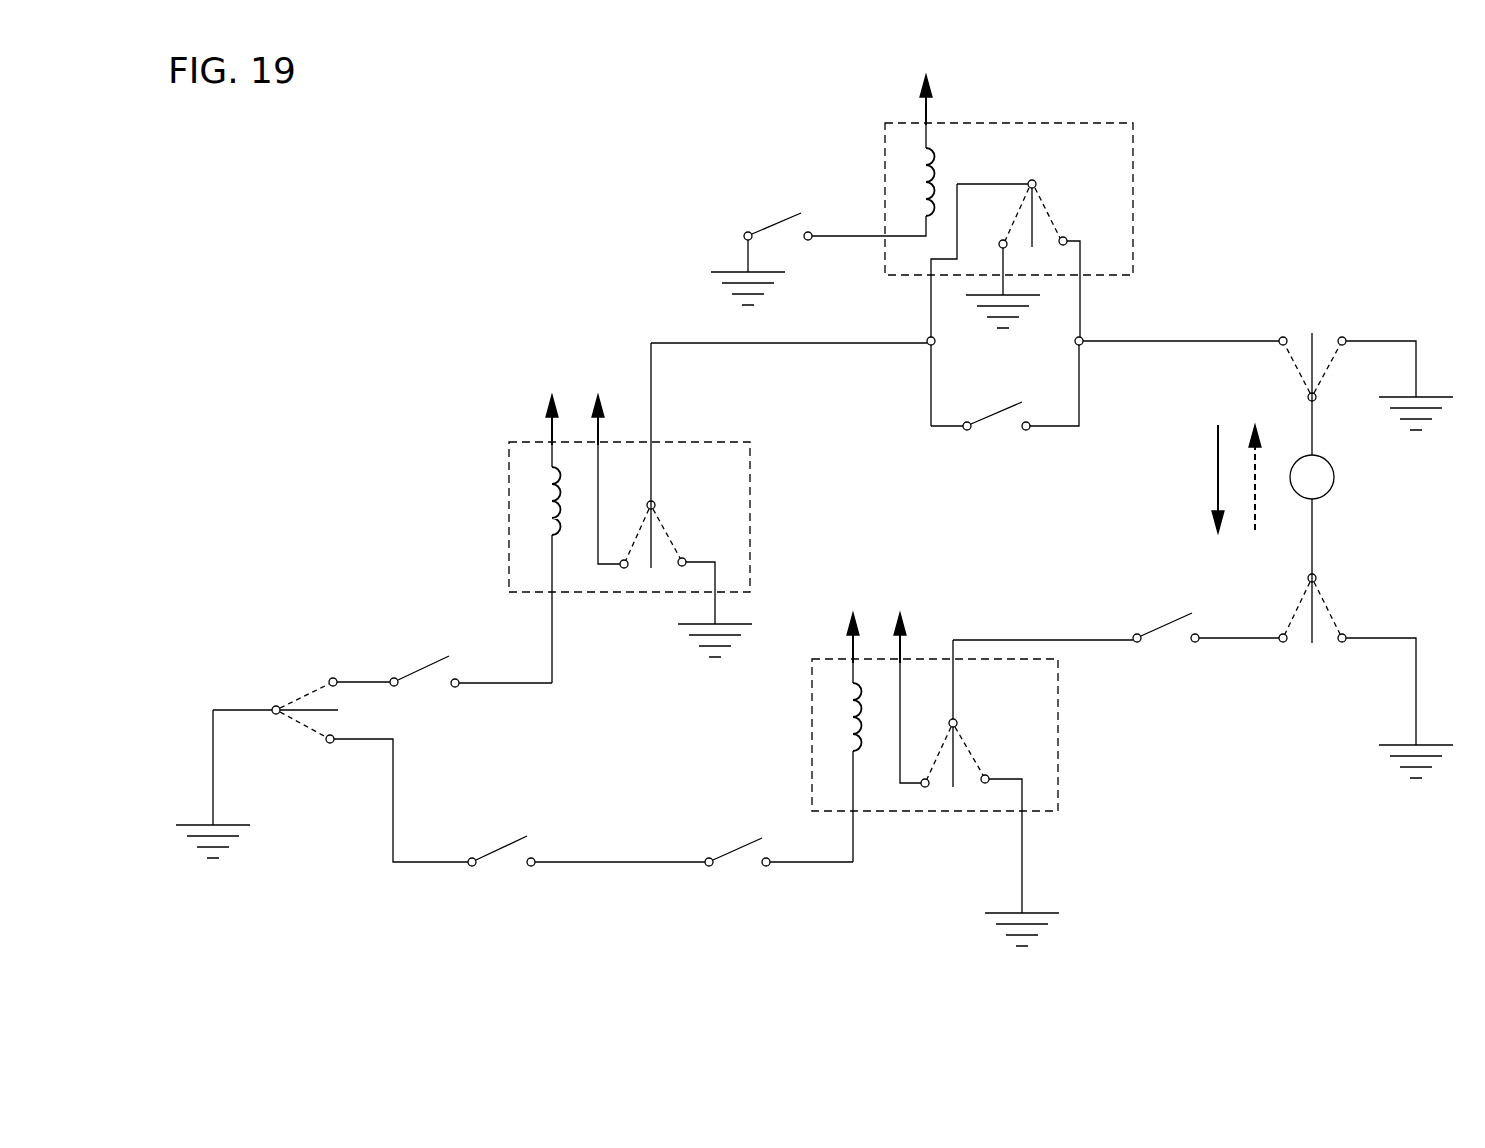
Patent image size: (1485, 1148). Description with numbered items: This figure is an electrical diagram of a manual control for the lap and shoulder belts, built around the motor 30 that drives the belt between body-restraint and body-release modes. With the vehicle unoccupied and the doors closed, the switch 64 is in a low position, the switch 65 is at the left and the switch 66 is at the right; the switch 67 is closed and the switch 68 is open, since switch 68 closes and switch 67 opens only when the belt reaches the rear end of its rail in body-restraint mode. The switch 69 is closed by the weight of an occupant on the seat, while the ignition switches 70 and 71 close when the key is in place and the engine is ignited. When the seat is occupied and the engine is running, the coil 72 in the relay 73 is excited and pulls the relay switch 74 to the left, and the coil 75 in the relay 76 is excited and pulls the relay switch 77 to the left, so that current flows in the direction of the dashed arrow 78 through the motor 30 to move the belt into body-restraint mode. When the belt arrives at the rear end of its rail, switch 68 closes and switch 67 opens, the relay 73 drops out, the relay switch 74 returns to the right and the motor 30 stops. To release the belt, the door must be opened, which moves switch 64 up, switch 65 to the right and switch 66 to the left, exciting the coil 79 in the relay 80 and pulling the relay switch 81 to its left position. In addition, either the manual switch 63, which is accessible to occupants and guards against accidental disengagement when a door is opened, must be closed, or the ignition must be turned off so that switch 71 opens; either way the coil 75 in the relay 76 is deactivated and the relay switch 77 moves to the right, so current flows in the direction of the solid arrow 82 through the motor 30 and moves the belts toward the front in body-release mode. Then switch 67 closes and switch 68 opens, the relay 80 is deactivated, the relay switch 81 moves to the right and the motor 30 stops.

The motor 30 is at (1334, 477).
The manual switch 63 is at (971, 428).
The switch 64 is at (274, 708).
The switch 65 is at (1316, 578).
The switch 66 is at (1308, 397).
The switch 67 is at (476, 864).
The switch 68 is at (392, 680).
The switch 69 is at (1137, 634).
The ignition switch 70 is at (713, 864).
The ignition switch 71 is at (748, 232).
The coil 72 is at (853, 717).
The relay 73 is at (1058, 734).
The relay switch 74 is at (955, 721).
The coil 75 is at (926, 183).
The relay 76 is at (1133, 194).
The relay switch 77 is at (1034, 182).
The dashed arrow 78 is at (1255, 533).
The coil 79 is at (552, 500).
The relay 80 is at (750, 513).
The relay switch 81 is at (653, 503).
The solid arrow 82 is at (1218, 468).